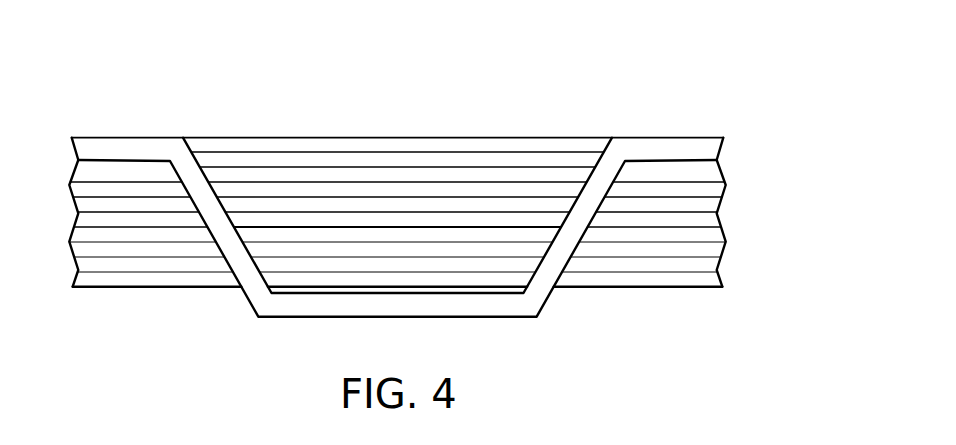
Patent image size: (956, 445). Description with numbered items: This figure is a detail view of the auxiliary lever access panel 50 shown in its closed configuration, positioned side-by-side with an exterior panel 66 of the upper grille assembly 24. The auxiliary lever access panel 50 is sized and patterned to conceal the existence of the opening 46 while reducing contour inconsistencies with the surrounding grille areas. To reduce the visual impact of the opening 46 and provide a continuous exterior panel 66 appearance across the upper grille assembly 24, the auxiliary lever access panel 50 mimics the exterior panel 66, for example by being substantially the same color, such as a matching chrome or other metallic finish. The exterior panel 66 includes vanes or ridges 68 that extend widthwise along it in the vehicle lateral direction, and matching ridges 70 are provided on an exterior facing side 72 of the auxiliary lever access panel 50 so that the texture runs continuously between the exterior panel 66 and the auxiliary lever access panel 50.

The upper grille assembly 24 is at (455, 157).
The opening 46 is at (397, 184).
The auxiliary lever access panel 50 is at (397, 161).
The exterior panel 66 is at (651, 182).
The vanes or ridges 68 is at (147, 233).
The matching ridges 70 is at (337, 242).
The exterior facing side 72 is at (334, 188).